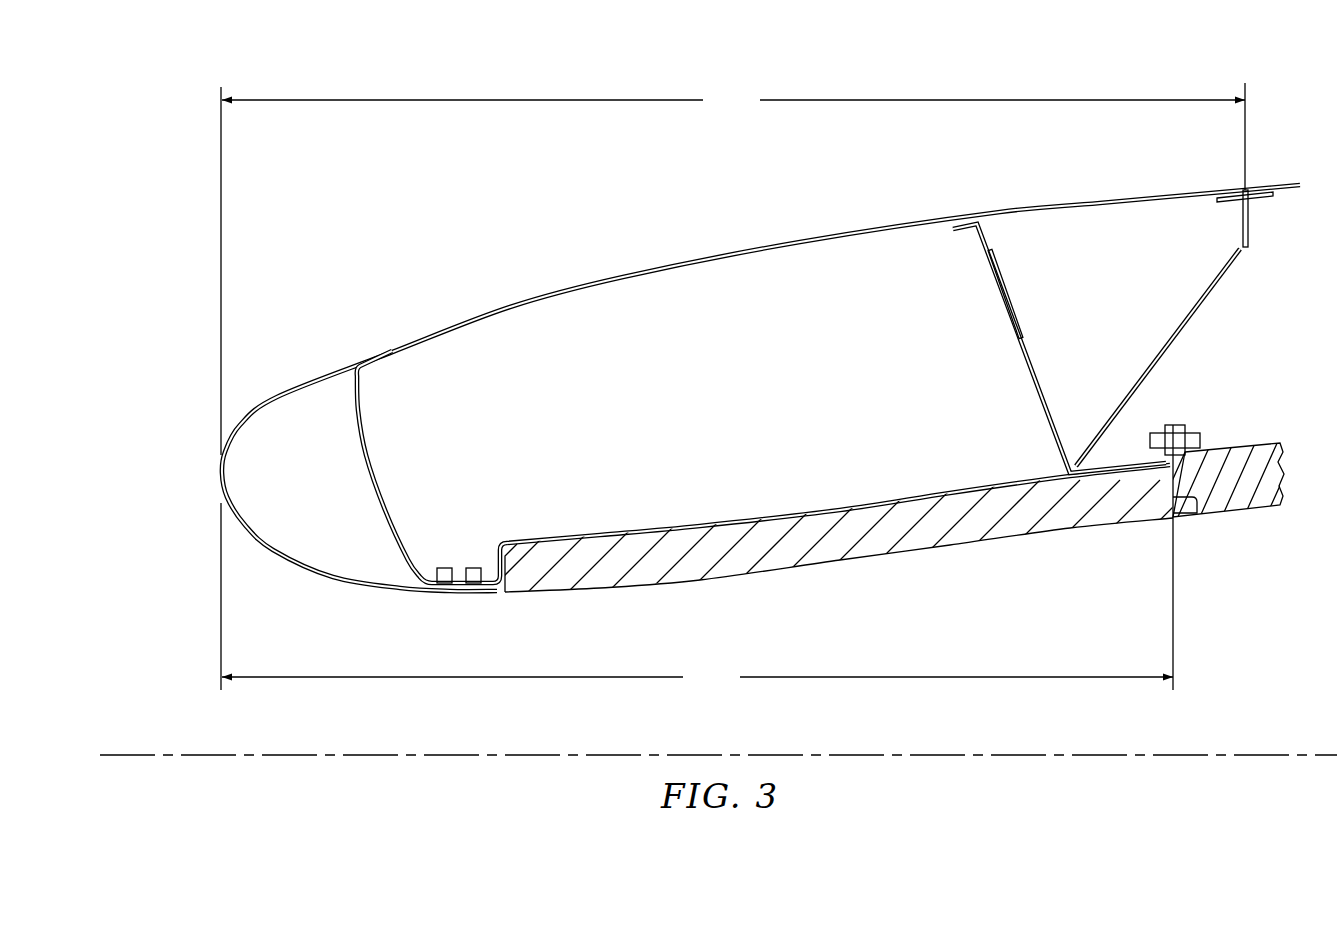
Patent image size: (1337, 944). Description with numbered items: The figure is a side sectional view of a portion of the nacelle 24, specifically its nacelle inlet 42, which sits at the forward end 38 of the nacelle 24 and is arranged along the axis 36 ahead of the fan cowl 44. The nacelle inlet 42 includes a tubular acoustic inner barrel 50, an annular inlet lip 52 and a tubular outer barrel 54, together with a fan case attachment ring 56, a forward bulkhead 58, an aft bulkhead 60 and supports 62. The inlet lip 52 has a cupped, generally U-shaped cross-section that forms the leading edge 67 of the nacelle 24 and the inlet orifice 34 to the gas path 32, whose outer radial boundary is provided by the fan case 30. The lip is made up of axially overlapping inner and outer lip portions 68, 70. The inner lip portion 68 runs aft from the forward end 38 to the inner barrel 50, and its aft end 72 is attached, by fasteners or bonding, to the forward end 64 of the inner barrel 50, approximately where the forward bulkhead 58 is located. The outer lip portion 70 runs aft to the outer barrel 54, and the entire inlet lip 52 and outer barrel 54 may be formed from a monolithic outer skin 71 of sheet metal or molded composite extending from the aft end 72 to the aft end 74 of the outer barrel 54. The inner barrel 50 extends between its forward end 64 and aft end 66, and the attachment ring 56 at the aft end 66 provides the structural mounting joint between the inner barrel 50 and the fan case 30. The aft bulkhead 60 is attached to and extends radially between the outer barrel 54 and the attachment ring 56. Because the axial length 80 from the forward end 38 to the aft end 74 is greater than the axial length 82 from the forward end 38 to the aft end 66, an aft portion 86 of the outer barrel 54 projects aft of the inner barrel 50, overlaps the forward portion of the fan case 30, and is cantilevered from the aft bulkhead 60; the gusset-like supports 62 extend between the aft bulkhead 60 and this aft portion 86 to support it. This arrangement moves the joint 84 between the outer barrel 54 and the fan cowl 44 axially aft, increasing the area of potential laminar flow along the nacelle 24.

The nacelle 24 is at (349, 246).
The fan containment case 30 is at (1245, 512).
The gas path 32 is at (607, 652).
The inlet orifice 34 is at (313, 613).
The axis 36 is at (272, 757).
The forward end 38 is at (222, 476).
The nacelle inlet 42 is at (630, 232).
The fan cowl 44 is at (1285, 181).
The acoustic inner barrel 50 is at (835, 563).
The inlet lip 52 is at (272, 548).
The outer barrel 54 is at (792, 241).
The fan case attachment ring 56 is at (1114, 466).
The forward bulkhead 58 is at (385, 495).
The aft bulkhead 60 is at (1002, 303).
The support 62 is at (1200, 285).
The forward end of inner barrel 64 is at (455, 592).
The aft end of inner barrel 66 is at (1185, 515).
The leading edge 67 is at (200, 503).
The inner lip portion 68 is at (329, 572).
The outer lip portion 70 is at (284, 394).
The monolithic outer skin 71 is at (504, 310).
The aft end of inner lip portion 72 is at (490, 598).
The aft end of outer barrel 74 is at (1252, 186).
The axial length 80 is at (733, 386).
The axial length 82 is at (697, 558).
The joint 84 is at (1238, 191).
The aft portion of outer barrel 86 is at (1154, 196).